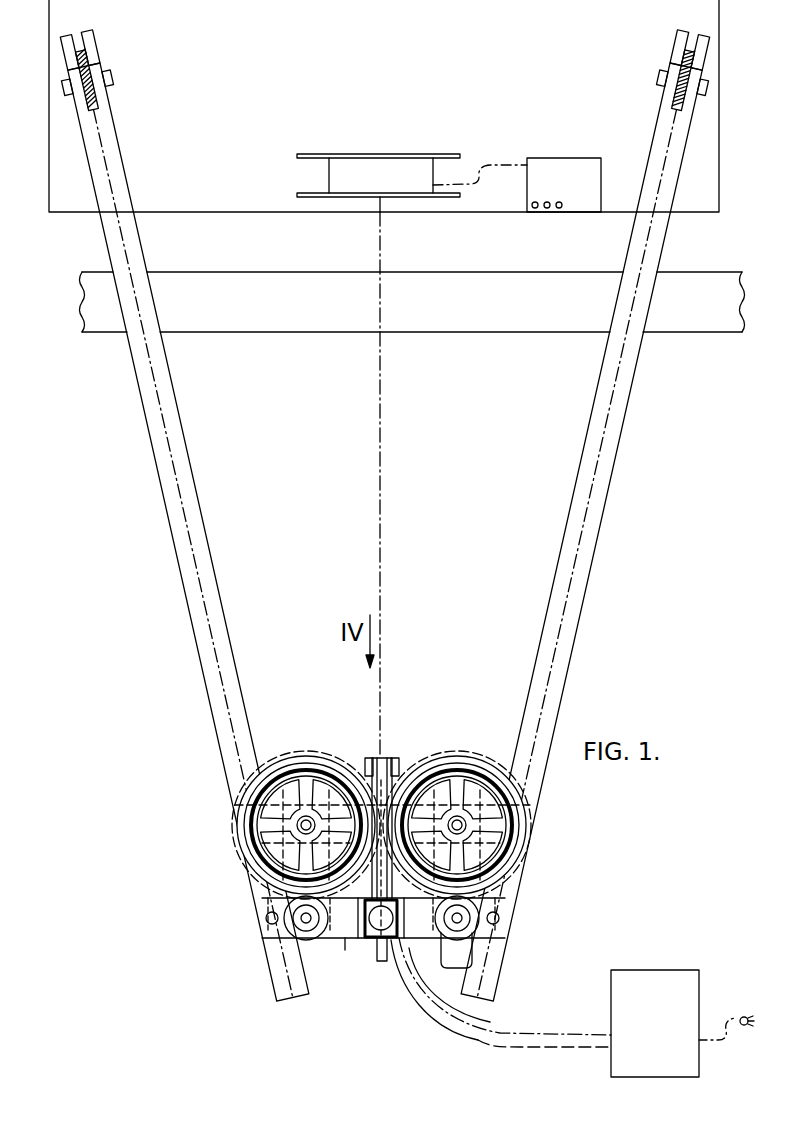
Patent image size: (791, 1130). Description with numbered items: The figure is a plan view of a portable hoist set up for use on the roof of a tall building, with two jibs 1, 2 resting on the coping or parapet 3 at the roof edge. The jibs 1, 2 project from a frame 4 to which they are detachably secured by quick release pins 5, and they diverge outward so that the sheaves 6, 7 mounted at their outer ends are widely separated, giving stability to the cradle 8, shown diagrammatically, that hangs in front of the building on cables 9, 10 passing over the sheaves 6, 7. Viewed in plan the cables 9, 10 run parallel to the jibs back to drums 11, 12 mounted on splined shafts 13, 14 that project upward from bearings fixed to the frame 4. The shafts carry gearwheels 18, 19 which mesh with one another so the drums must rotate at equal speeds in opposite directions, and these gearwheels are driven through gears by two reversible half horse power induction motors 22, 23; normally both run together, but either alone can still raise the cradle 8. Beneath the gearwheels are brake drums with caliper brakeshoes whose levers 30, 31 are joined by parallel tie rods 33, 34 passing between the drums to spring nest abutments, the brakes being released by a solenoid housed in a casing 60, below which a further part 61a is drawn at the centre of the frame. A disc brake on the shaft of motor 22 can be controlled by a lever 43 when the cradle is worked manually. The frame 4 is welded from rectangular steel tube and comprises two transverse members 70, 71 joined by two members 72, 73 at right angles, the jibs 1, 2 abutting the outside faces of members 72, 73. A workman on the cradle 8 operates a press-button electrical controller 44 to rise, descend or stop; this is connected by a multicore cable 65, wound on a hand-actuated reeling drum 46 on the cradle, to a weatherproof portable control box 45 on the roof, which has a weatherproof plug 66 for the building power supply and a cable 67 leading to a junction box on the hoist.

The jib 1 is at (565, 645).
The jib 2 is at (207, 637).
The coping or parapet 3 is at (304, 307).
The frame 4 is at (323, 948).
The quick release pins 5 is at (266, 919).
The sheave 6 is at (668, 107).
The sheave 7 is at (97, 97).
The cradle 8 is at (695, 200).
The cable 9 is at (612, 397).
The cable 10 is at (176, 458).
The drum 11 is at (500, 833).
The drum 12 is at (258, 830).
The splined shaft 13 is at (464, 823).
The splined shaft 14 is at (300, 823).
The gearwheel 18 is at (487, 762).
The gearwheel 19 is at (282, 765).
The motor 22 is at (473, 934).
The motor 23 is at (290, 935).
The lever 30 is at (368, 766).
The lever 31 is at (404, 760).
The tie rod 33 is at (364, 898).
The tie rod 34 is at (397, 898).
The lever 43 is at (472, 960).
The electrical controller 44 is at (556, 172).
The control box 45 is at (670, 977).
The reeling drum 46 is at (345, 155).
The casing 60 is at (377, 940).
The stem 61a is at (384, 950).
The multicore cable 65 is at (490, 163).
The weatherproof plug 66 is at (739, 1028).
The cable 67 is at (500, 1043).
The transverse member 70 is at (302, 758).
The transverse member 71 is at (345, 950).
The frame member 72 is at (522, 870).
The frame member 73 is at (258, 866).